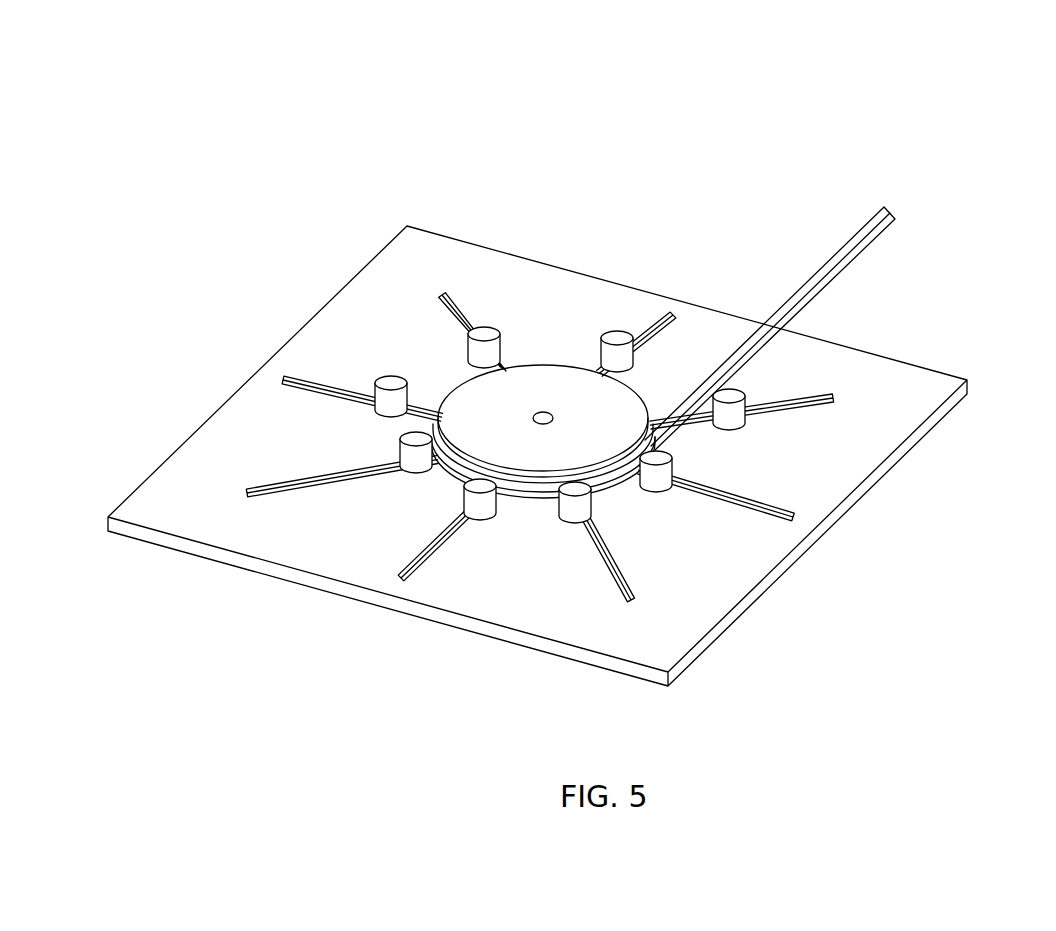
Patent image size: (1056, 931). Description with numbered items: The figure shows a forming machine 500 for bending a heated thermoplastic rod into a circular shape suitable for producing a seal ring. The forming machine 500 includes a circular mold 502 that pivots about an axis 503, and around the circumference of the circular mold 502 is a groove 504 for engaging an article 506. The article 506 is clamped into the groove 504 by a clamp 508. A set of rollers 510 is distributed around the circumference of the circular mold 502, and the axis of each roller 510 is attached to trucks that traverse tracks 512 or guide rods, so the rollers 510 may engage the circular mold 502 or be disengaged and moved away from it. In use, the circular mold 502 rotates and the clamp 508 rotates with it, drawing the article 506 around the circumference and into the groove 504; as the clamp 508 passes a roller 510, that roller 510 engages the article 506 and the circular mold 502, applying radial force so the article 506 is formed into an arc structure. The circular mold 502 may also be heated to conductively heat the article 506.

The forming machine 500 is at (358, 86).
The circular mold 502 is at (535, 368).
The axis 503 is at (543, 424).
The groove 504 is at (603, 483).
The article 506 is at (847, 248).
The clamp 508 is at (420, 390).
The rollers 510 is at (375, 393).
The tracks 512 is at (283, 378).